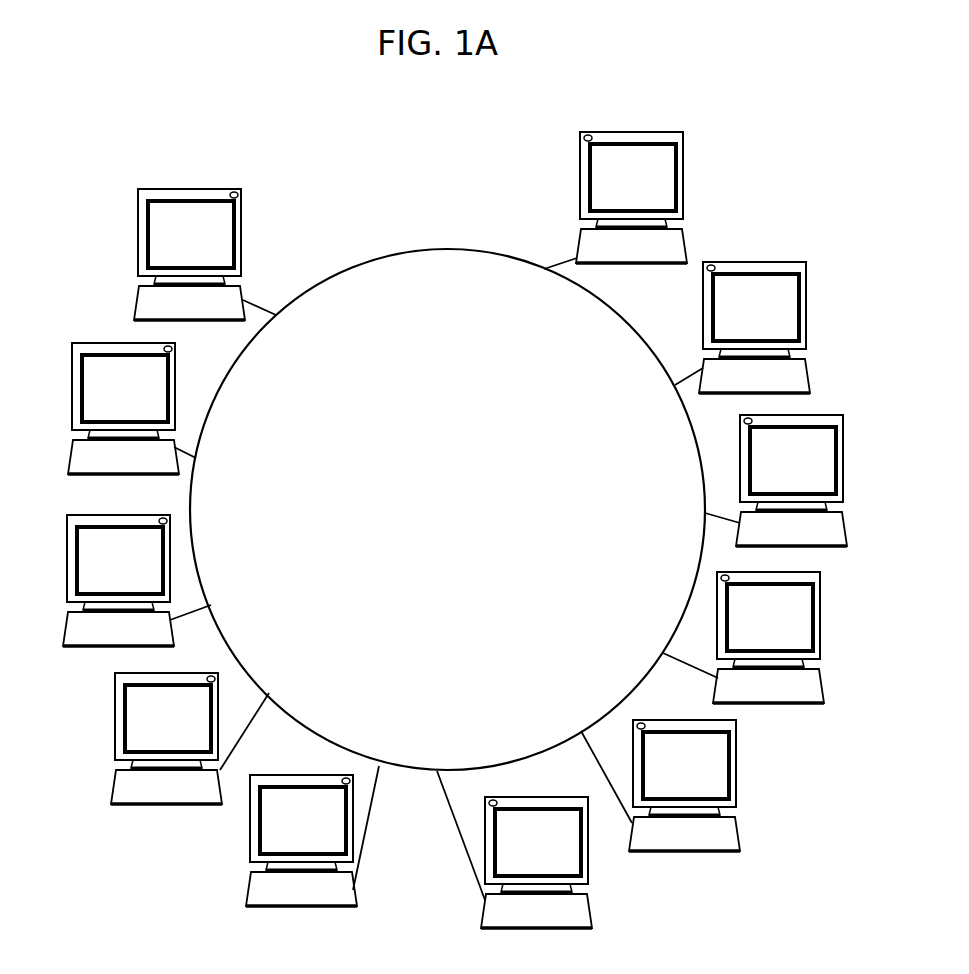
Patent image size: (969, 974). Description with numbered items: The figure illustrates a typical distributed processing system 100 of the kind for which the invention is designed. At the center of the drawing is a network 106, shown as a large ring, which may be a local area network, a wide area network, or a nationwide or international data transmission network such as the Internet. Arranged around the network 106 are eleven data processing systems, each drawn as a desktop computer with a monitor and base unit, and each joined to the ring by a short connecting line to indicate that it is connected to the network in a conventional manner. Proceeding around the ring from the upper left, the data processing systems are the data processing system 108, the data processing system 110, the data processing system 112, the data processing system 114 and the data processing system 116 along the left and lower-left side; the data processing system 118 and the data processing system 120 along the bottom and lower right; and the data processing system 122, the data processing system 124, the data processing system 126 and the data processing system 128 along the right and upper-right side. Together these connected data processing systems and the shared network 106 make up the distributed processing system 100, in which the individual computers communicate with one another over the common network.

The distributed processing system 100 is at (337, 178).
The network 106 is at (318, 293).
The data processing system 108 is at (138, 298).
The data processing system 110 is at (72, 455).
The data processing system 112 is at (67, 625).
The data processing system 114 is at (117, 782).
The data processing system 116 is at (252, 887).
The data processing system 118 is at (588, 908).
The data processing system 120 is at (737, 825).
The data processing system 122 is at (822, 685).
The data processing system 124 is at (845, 533).
The data processing system 126 is at (827, 368).
The data processing system 128 is at (682, 245).